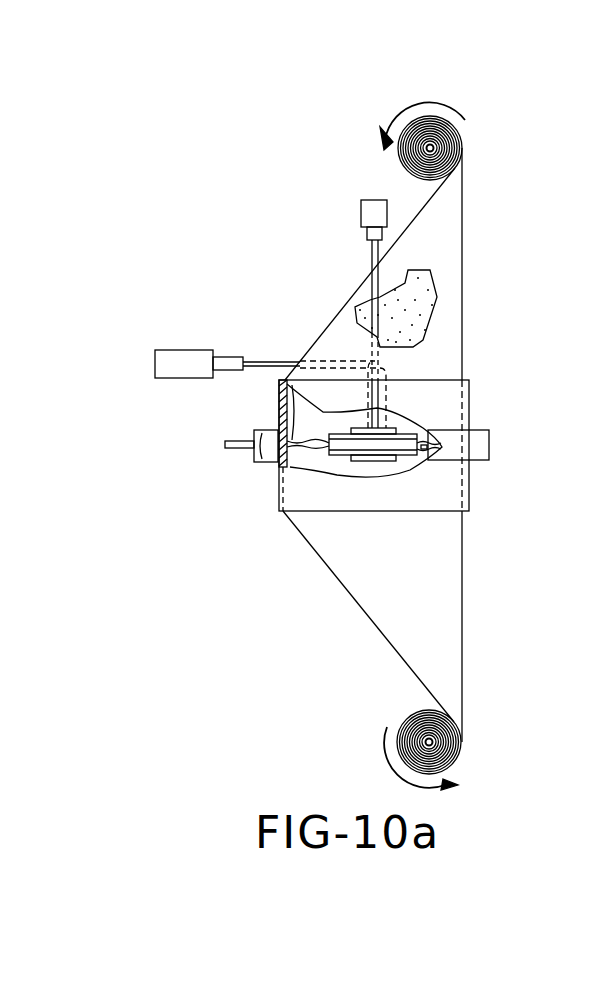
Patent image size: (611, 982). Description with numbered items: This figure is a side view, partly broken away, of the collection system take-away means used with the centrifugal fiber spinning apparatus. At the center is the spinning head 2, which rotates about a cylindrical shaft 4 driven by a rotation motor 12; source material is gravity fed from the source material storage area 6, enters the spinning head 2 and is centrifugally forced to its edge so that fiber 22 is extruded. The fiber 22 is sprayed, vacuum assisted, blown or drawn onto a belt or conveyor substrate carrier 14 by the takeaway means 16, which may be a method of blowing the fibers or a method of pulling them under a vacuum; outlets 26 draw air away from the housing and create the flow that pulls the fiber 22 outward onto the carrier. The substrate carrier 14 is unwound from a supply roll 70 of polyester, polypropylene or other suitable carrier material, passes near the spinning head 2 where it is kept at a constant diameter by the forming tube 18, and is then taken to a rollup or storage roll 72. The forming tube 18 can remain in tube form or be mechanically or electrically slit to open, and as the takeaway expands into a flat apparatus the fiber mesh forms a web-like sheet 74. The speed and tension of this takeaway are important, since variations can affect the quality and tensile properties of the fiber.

The spinning head 2 is at (400, 443).
The cylindrical shaft 4 is at (372, 250).
The source material storage area 6 is at (175, 355).
The rotation motor 12 is at (378, 212).
The substrate carrier 14 is at (385, 583).
The takeaway means 16 is at (345, 325).
The forming tube 18 is at (328, 494).
The fiber 22 is at (430, 445).
The outlets 26 is at (243, 447).
The supply roll 70 is at (440, 752).
The storage roll 72 is at (445, 148).
The web-like sheet 74 is at (420, 298).